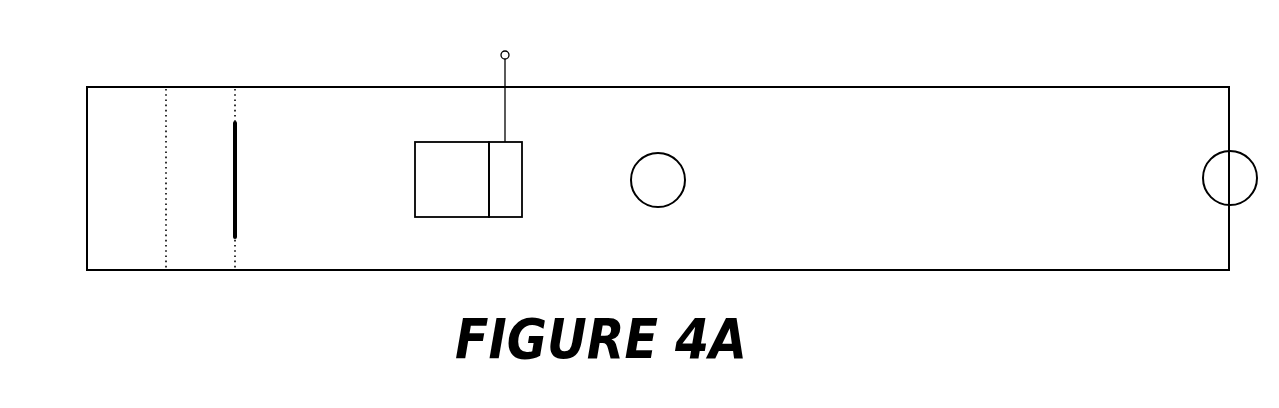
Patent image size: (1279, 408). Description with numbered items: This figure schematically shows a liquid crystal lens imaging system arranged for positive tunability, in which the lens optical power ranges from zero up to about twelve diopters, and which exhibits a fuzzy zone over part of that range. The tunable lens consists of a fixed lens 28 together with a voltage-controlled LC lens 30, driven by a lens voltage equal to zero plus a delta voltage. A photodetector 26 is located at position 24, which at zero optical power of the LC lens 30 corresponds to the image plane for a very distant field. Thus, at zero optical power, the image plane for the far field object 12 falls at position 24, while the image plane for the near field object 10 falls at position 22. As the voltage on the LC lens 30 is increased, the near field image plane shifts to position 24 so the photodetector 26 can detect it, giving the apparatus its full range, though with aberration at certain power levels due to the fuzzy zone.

The near field object 10 is at (673, 169).
The far field object 12 is at (1213, 174).
The image plane position for near field object 22 is at (163, 172).
The photodetector position 24 is at (240, 257).
The photodetector 26 is at (238, 173).
The fixed lens 28 is at (426, 160).
The LC lens 30 is at (510, 202).